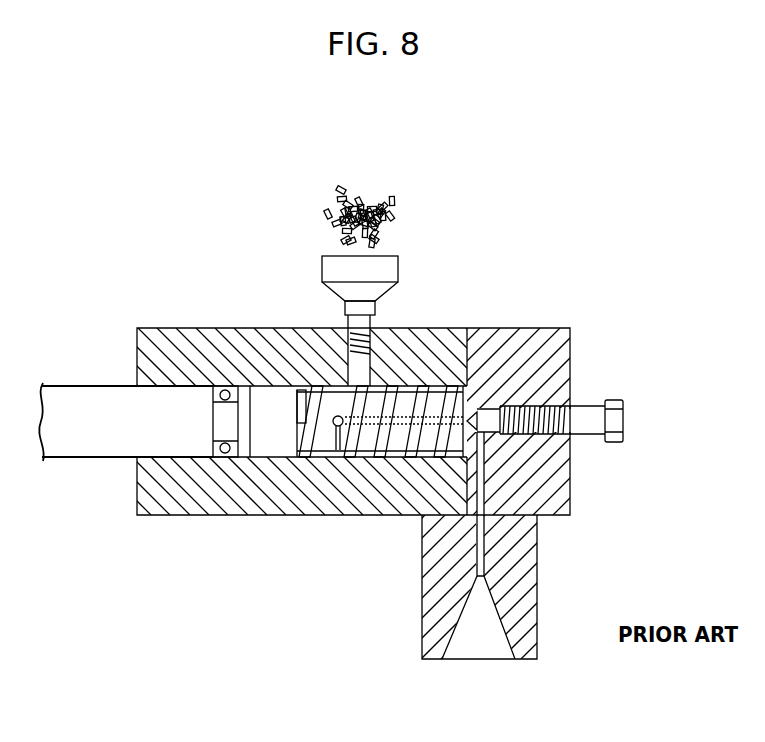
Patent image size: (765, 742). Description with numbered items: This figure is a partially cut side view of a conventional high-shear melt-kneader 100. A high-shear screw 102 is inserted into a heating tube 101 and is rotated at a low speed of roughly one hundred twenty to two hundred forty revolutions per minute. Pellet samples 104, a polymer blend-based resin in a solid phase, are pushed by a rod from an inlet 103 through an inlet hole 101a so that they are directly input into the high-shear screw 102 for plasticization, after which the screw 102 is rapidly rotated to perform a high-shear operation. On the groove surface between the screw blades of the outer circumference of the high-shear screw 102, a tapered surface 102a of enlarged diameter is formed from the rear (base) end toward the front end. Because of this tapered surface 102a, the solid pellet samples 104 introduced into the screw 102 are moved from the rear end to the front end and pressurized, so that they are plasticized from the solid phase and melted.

The high-shear melt-kneader 100 is at (583, 195).
The heating tube 101 is at (232, 328).
The inlet hole 101a is at (363, 352).
The high-shear screw 102 is at (368, 445).
The tapered surface 102a is at (386, 388).
The inlet 103 is at (327, 253).
The pellet samples 104 is at (390, 210).